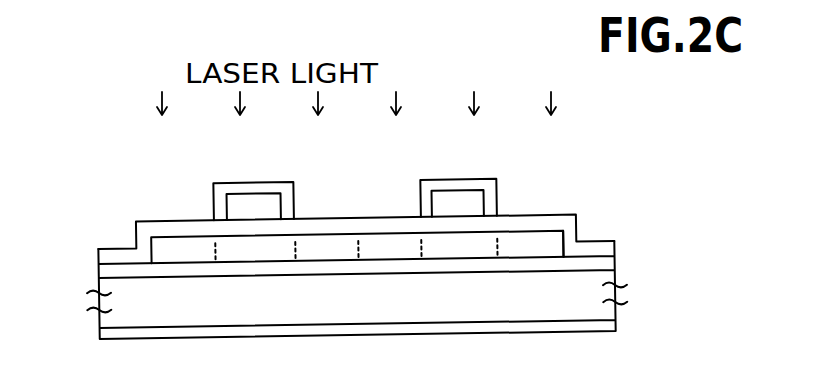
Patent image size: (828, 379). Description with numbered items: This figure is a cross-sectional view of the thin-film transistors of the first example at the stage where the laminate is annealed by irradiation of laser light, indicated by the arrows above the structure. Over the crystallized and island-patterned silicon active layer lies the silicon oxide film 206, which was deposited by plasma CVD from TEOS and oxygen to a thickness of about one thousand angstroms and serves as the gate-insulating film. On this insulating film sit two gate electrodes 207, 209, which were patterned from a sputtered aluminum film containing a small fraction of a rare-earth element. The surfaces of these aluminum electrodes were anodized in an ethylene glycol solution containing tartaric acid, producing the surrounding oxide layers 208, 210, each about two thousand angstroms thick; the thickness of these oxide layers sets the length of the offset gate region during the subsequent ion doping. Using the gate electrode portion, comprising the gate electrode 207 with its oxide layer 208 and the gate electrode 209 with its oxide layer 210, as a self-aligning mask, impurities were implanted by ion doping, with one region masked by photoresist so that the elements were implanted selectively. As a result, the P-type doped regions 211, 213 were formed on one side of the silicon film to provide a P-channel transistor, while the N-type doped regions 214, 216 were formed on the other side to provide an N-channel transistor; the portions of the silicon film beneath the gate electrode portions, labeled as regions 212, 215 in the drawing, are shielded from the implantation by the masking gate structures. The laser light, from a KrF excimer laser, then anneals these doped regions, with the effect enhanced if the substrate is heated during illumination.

The silicon oxide film 206 is at (343, 217).
The gate electrode 207 is at (250, 202).
The oxide layer 208 is at (260, 187).
The gate electrode 209 is at (465, 198).
The oxide layer 210 is at (440, 182).
The P-type doped region 211 is at (190, 248).
The first region of semiconductor layer 212 is at (243, 247).
The P-type doped region 213 is at (322, 246).
The N-type doped region 214 is at (397, 245).
The fourth region of semiconductor layer 215 is at (472, 242).
The N-type doped region 216 is at (525, 242).